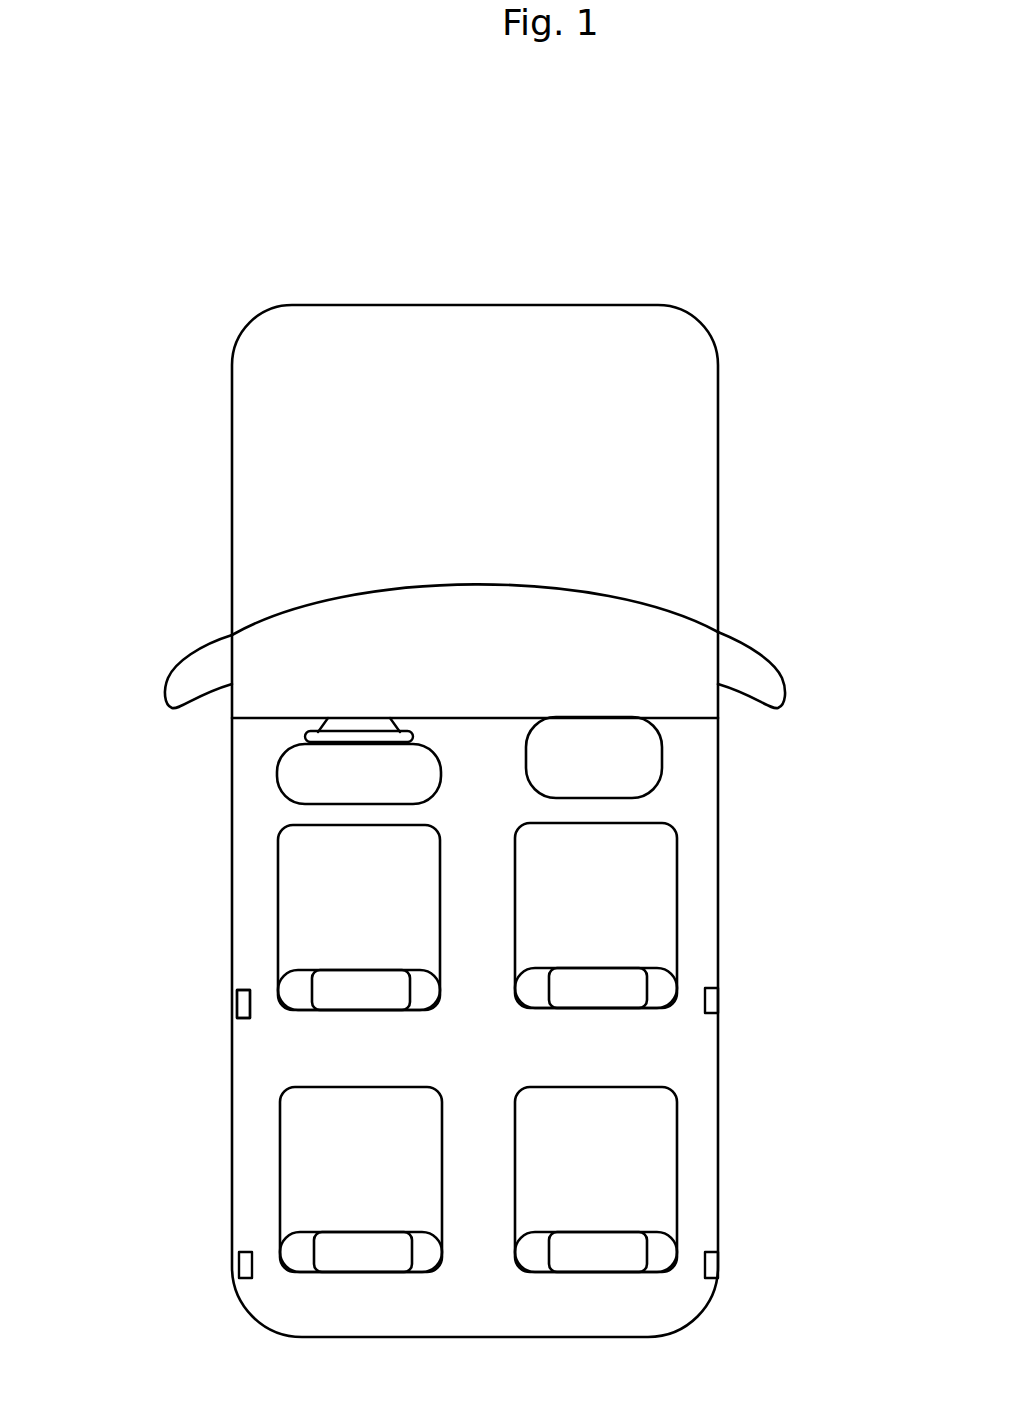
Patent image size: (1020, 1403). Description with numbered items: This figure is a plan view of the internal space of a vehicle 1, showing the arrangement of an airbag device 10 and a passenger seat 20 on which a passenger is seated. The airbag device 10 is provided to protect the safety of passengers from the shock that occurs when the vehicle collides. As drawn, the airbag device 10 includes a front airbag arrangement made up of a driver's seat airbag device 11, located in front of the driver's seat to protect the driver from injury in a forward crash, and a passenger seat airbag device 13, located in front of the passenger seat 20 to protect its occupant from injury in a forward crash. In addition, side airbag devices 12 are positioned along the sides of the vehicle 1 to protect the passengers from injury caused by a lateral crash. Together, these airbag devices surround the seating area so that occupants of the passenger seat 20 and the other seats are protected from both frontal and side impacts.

The vehicle 1 is at (186, 246).
The airbag device 10 is at (123, 773).
The driver's seat airbag device 11 is at (305, 776).
The side airbag device 12 is at (242, 1003).
The passenger seat airbag device 13 is at (577, 772).
The passenger seat 20 is at (637, 900).